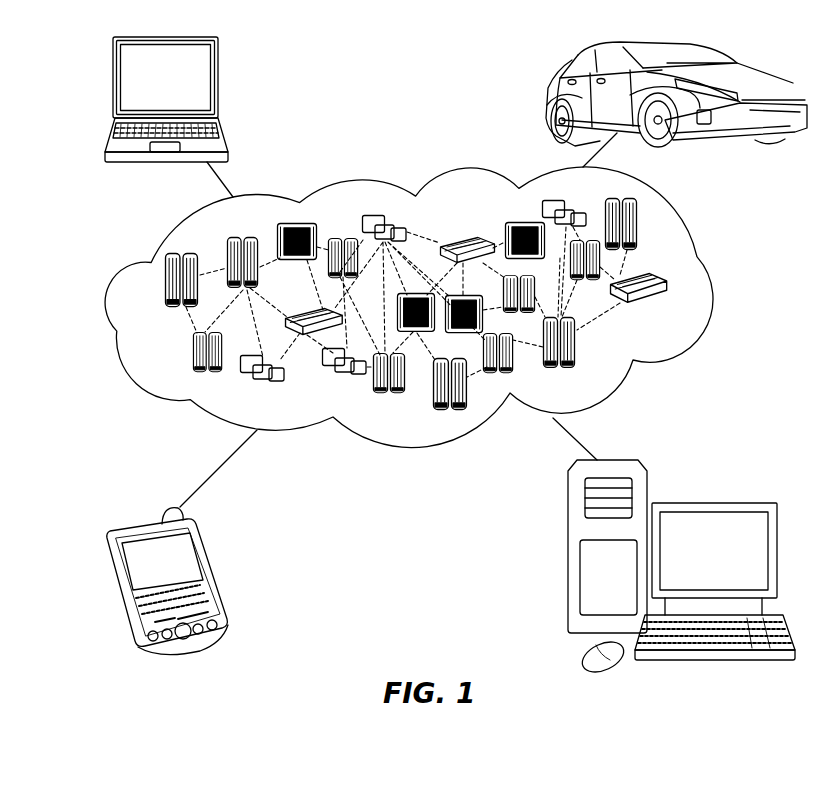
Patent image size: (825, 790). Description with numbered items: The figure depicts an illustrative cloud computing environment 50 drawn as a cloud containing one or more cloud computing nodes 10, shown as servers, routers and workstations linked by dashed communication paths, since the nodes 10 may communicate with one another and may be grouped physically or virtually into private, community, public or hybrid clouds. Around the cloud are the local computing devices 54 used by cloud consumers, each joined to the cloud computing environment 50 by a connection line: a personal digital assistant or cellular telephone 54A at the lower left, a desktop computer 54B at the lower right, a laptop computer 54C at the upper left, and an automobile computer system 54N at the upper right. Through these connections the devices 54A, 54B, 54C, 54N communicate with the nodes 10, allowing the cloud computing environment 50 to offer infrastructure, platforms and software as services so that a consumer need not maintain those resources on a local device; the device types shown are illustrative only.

The cloud computing nodes 10 is at (674, 311).
The cloud computing environment 50 is at (718, 284).
The local computing devices 54 is at (456, 357).
The personal digital assistant (PDA) or cellular telephone 54A is at (214, 574).
The desktop computer 54B is at (710, 504).
The laptop computer 54C is at (218, 87).
The automobile computer system 54N is at (547, 97).